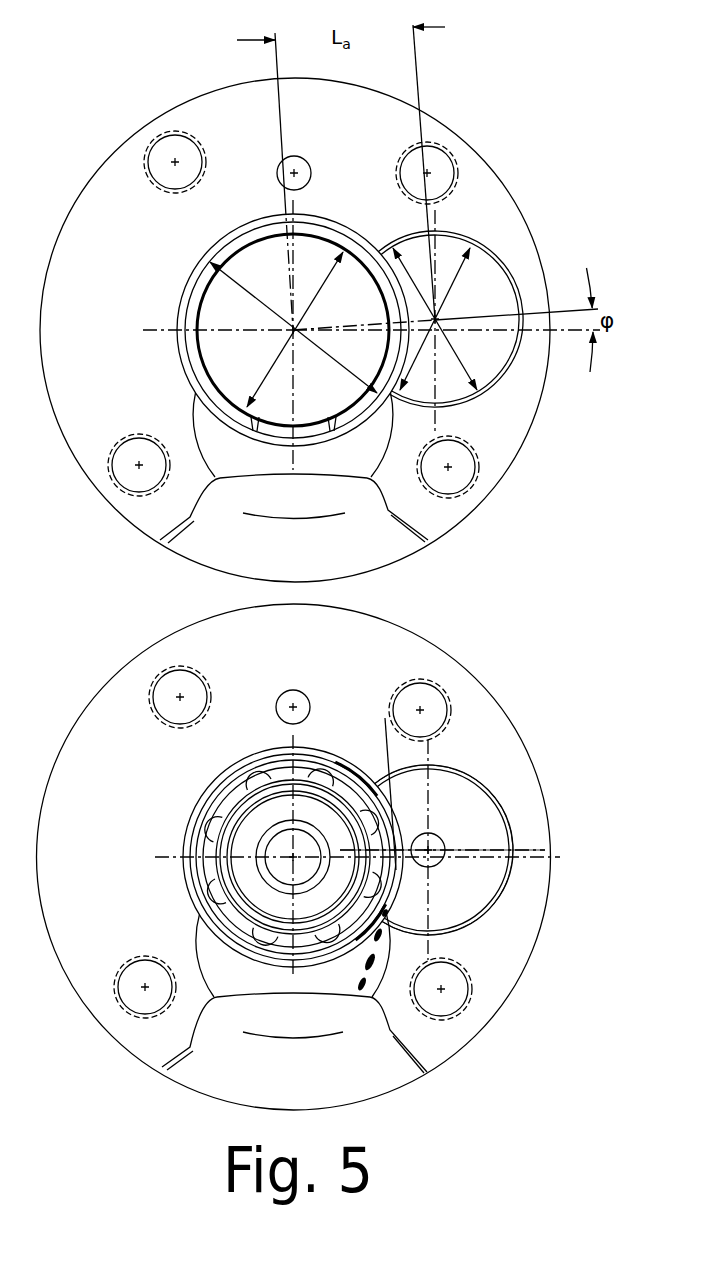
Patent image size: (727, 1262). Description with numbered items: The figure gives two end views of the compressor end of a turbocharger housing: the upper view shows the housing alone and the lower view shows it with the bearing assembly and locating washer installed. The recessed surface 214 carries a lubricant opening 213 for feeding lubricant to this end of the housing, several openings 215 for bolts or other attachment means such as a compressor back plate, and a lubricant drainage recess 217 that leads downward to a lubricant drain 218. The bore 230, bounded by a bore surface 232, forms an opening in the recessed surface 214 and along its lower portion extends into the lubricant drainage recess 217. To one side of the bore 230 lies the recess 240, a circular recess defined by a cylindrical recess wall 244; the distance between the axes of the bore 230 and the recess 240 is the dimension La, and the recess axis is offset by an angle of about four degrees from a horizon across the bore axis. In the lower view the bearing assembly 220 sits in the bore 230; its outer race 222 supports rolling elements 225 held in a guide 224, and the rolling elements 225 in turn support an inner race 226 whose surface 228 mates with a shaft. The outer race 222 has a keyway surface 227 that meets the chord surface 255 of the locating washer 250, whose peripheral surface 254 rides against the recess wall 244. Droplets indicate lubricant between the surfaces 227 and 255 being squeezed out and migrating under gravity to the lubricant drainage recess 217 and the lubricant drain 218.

The lubricant opening 213 is at (278, 182).
The recessed surface 214 is at (313, 129).
The openings 215 is at (153, 145).
The lubricant drainage recess 217 is at (223, 447).
The lubricant drain 218 is at (276, 511).
The bearing assembly 220 is at (197, 787).
The outer race 222 is at (203, 820).
The guide 224 is at (215, 868).
The rolling elements 225 is at (205, 838).
The inner race 226 is at (243, 873).
The surface 227 is at (388, 877).
The surface 228 is at (263, 878).
The bore 230 is at (183, 363).
The bore surface 232 is at (192, 382).
The recess 240 is at (465, 304).
The recess wall 244 is at (413, 232).
The locating washer 250 is at (456, 883).
The peripheral surface 254 is at (487, 792).
The surface 255 is at (385, 718).